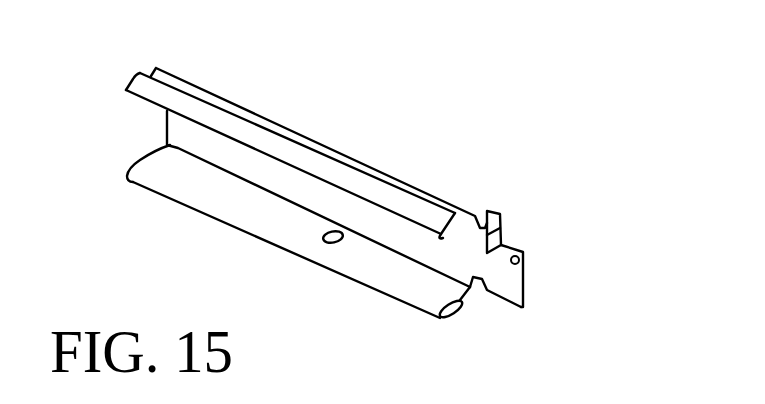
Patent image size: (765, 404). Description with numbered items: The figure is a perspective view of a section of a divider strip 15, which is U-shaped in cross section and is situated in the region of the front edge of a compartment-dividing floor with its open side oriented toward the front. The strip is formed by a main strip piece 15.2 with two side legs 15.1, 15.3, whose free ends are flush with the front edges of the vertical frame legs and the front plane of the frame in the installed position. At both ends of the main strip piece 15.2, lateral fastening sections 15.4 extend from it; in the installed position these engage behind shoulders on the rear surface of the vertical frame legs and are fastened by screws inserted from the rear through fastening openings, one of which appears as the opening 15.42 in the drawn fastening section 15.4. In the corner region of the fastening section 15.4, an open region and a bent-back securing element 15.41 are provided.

The divider strip 15 is at (307, 122).
The side leg 15.1 is at (220, 100).
The main strip piece 15.2 is at (147, 92).
The side leg 15.3 is at (153, 190).
The fastening section 15.4 is at (526, 240).
The securing element 15.41 is at (504, 224).
The hole 15.42 is at (520, 260).